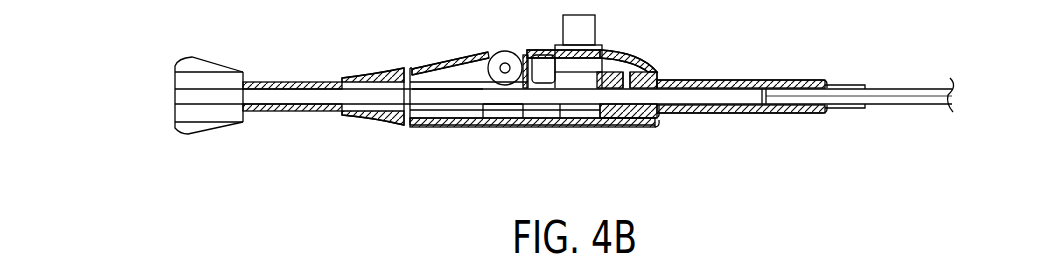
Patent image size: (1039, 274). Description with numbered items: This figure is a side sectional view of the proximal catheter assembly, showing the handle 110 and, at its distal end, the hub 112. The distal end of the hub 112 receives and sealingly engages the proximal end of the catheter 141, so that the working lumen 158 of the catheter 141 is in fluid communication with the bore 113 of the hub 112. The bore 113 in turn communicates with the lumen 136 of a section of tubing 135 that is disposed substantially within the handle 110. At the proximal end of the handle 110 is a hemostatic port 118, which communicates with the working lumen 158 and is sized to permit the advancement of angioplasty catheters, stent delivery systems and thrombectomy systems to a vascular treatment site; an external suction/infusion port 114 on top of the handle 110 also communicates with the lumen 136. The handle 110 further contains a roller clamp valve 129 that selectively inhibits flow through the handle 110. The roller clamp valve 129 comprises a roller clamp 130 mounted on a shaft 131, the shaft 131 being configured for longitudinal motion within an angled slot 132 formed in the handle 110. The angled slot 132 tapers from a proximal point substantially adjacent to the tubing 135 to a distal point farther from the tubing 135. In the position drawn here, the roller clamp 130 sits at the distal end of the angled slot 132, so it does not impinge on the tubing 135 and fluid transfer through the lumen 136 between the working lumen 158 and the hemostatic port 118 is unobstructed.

The handle 110 is at (538, 132).
The hub 112 is at (703, 126).
The bore 113 is at (743, 95).
The external suction/infusion port 114 is at (597, 32).
The hemostatic port 118 is at (200, 130).
The roller clamp valve 129 is at (489, 51).
The roller clamp 130 is at (505, 67).
The shaft 131 is at (513, 56).
The angled slot 132 is at (432, 82).
The tubing 135 is at (485, 105).
The lumen 136 is at (437, 95).
The catheter 141 is at (945, 107).
The working lumen 158 is at (802, 95).